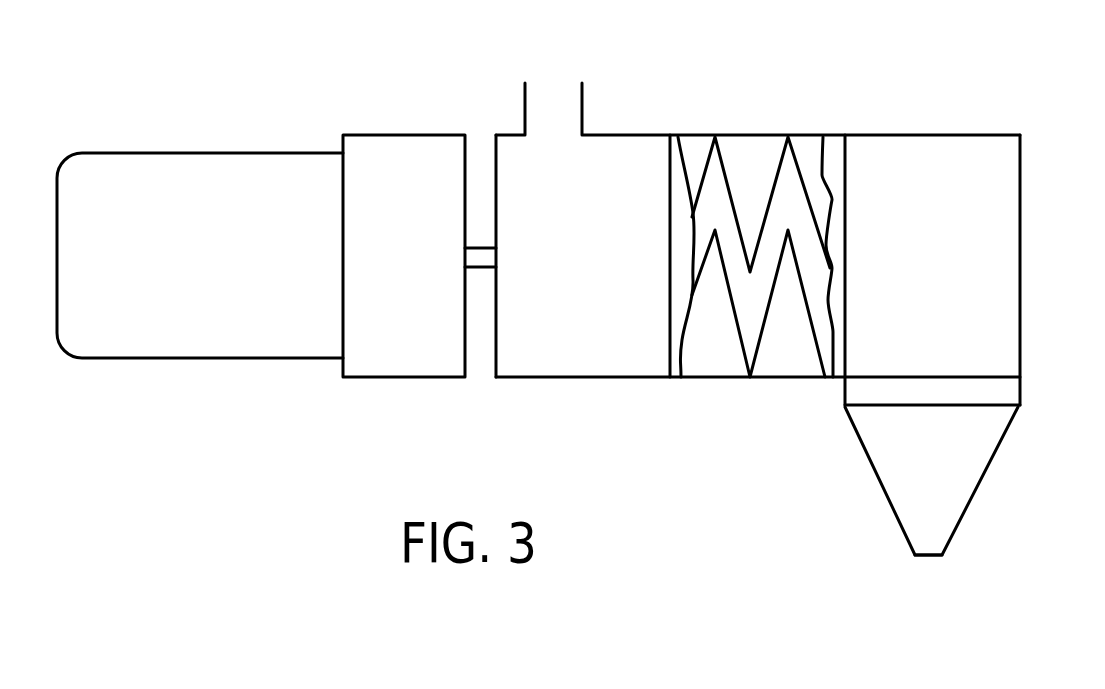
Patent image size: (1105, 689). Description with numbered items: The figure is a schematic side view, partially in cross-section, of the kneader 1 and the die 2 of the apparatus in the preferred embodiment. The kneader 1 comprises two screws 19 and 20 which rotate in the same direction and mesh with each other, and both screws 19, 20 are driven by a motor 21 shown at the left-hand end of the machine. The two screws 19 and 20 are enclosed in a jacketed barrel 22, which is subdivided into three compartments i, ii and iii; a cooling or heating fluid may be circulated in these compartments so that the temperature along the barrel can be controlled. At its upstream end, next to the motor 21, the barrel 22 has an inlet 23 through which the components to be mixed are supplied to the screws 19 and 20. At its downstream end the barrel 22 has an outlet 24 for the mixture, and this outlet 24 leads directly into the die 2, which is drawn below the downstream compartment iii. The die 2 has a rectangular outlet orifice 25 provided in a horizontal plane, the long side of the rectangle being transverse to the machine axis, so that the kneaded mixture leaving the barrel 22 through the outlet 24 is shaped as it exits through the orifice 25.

The kneader 1 is at (640, 88).
The die 2 is at (993, 460).
The screw 19 is at (763, 330).
The screw 20 is at (793, 152).
The motor 21 is at (183, 358).
The jacketed barrel 22 is at (747, 135).
The inlet 23 is at (552, 87).
The outlet 24 is at (962, 377).
The rectangular outlet orifice 25 is at (927, 555).
The compartment i is at (575, 377).
The compartment ii is at (747, 377).
The compartment iii is at (1020, 288).